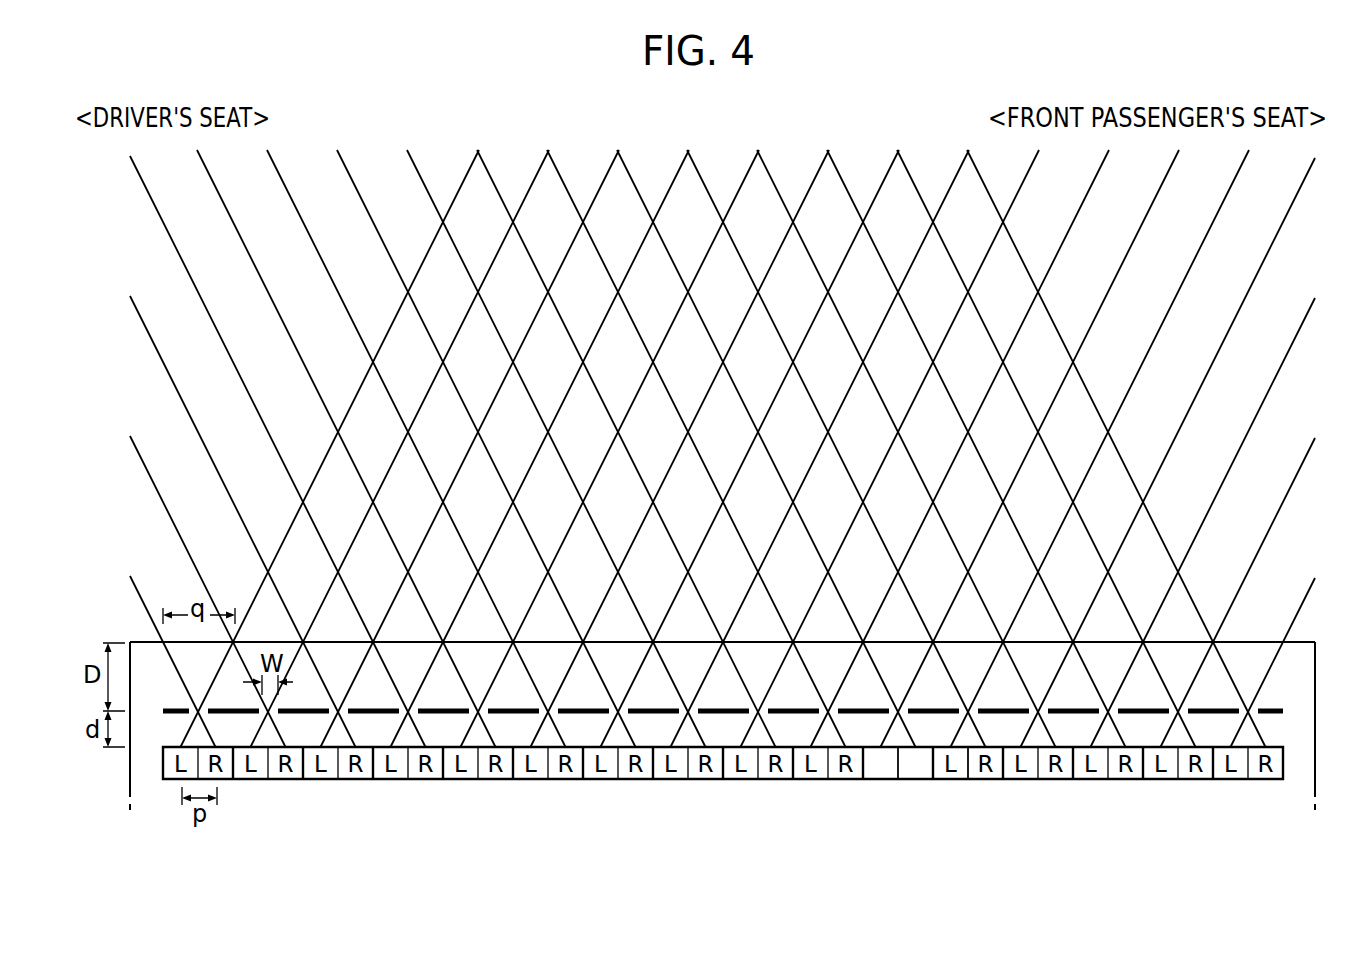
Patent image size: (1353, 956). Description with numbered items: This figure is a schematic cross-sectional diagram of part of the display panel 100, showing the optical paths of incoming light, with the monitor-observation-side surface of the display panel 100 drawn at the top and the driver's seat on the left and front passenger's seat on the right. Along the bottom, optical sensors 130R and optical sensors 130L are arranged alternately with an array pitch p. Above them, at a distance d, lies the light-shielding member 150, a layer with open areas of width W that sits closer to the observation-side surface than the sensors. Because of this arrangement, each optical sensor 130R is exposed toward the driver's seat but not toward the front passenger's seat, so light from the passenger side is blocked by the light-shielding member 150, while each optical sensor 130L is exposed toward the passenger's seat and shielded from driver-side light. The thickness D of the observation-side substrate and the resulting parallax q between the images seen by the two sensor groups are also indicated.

The display panel 100 is at (1311, 642).
The light-shielding member 150 is at (1220, 710).
The optical sensors 130R is at (918, 780).
The optical sensors 130L is at (948, 780).